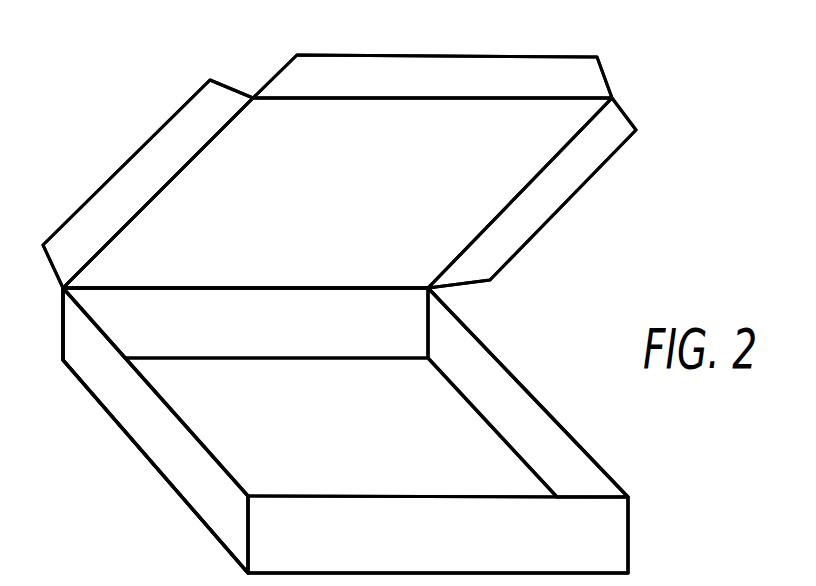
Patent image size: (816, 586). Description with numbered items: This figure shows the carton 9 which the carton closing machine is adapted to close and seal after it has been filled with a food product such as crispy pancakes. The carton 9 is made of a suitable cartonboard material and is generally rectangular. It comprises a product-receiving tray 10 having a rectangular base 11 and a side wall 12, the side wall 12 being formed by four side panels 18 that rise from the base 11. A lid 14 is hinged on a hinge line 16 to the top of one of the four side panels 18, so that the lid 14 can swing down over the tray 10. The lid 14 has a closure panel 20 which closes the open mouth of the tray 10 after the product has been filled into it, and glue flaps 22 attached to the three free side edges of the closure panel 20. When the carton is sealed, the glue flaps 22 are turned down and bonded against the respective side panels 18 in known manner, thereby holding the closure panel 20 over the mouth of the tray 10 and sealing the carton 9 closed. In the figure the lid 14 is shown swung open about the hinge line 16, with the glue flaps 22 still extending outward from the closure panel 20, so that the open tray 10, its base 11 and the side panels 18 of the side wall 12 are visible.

The carton 9 is at (150, 94).
The product-receiving tray 10 is at (188, 516).
The rectangular base 11 is at (366, 432).
The side wall 12 is at (158, 434).
The lid 14 is at (550, 228).
The hinge line 16 is at (302, 288).
The side panels 18 is at (306, 329).
The closure panel 20 is at (410, 185).
The glue flaps 22 is at (135, 175).